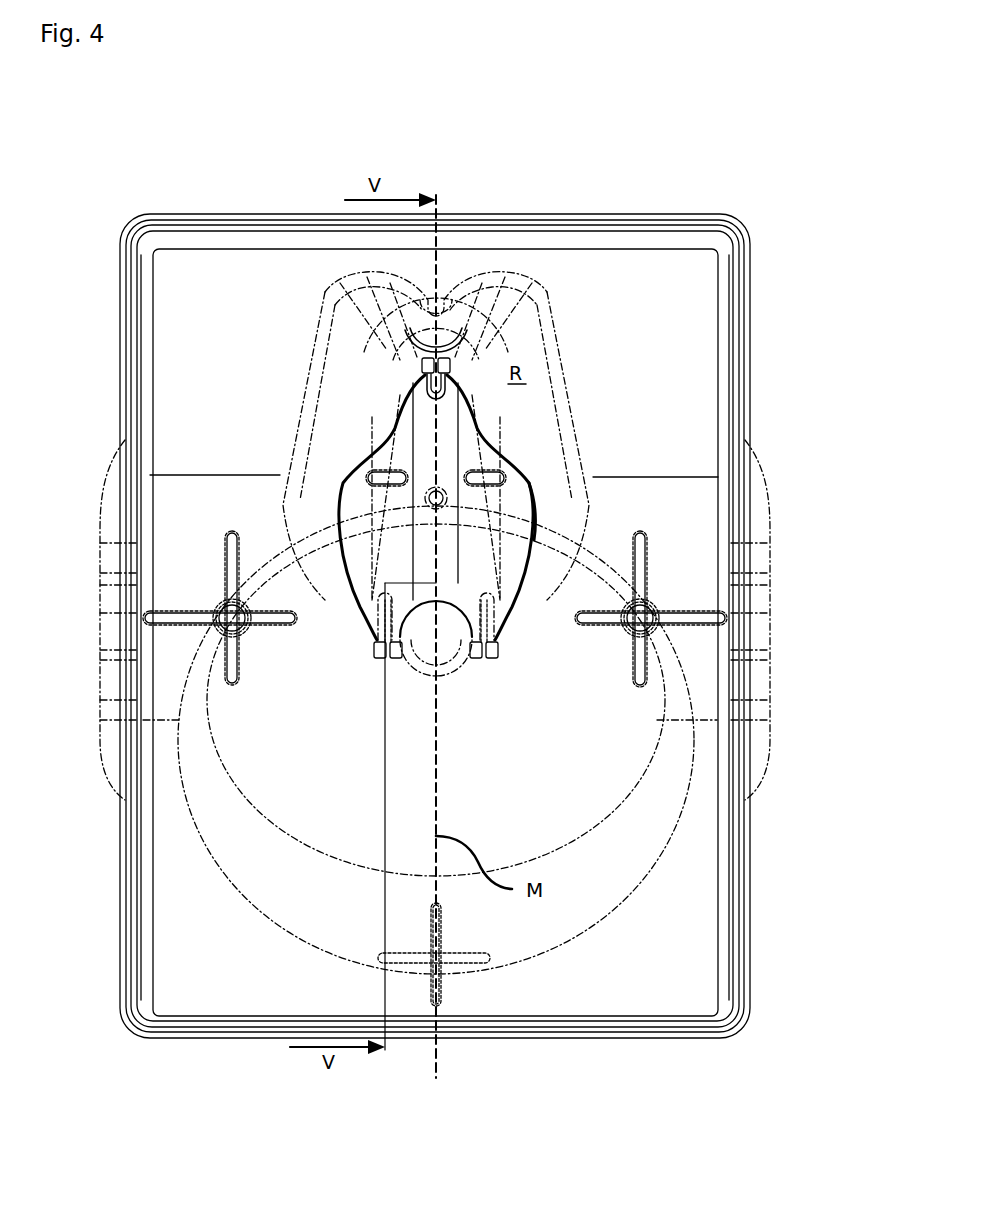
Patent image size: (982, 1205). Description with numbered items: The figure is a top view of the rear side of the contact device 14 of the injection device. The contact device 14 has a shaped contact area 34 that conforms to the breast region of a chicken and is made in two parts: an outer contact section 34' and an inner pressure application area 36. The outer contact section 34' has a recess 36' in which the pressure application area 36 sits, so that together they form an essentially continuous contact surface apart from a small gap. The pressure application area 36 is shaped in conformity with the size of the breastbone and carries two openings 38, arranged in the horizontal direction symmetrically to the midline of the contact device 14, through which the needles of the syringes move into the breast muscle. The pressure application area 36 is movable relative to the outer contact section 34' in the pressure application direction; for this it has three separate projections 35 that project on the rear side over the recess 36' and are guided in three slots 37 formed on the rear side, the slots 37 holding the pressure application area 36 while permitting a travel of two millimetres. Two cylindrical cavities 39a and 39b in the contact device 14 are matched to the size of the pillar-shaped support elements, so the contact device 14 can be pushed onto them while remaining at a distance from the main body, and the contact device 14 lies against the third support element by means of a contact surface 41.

The contact device 14 is at (466, 205).
The contact surface 41 is at (455, 343).
The openings 38 is at (397, 477).
The pressure application area 36 is at (585, 507).
The recess 36' is at (683, 470).
The slots 37 is at (422, 368).
The projections 35 is at (432, 377).
The cylindrical cavity 39a is at (640, 618).
The cylindrical cavity 39b is at (232, 618).
The contact area 34 is at (500, 740).
The outer contact section 34' is at (517, 700).